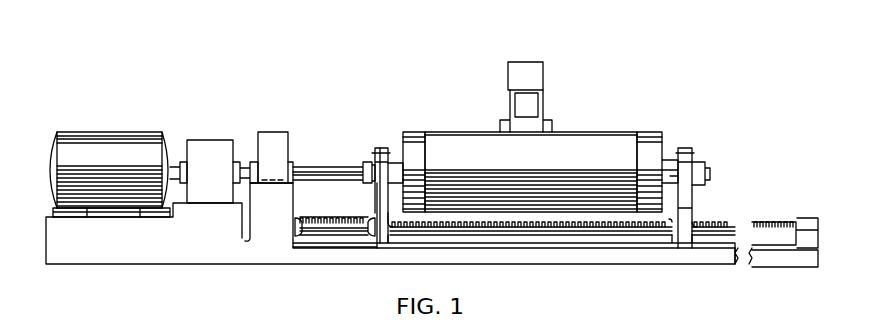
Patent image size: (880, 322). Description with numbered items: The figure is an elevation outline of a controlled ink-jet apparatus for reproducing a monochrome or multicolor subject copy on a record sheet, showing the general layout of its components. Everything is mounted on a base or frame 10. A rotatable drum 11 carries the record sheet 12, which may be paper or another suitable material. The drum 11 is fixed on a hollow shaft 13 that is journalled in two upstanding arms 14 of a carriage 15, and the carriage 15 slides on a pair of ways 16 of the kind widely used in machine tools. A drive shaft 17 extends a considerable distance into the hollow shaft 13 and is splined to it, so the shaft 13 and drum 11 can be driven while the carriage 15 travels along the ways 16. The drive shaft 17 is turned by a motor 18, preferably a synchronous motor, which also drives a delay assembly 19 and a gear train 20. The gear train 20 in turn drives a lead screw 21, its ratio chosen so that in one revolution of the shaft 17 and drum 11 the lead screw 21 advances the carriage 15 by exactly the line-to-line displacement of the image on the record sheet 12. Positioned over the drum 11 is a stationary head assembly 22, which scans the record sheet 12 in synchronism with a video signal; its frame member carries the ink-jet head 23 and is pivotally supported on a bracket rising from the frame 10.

The base or frame 10 is at (125, 253).
The drum 11 is at (413, 132).
The record sheet 12 is at (475, 132).
The shaft 13 is at (708, 169).
The upstanding arms 14 is at (383, 148).
The carriage 15 is at (522, 240).
The ways 16 is at (349, 237).
The drive shaft 17 is at (327, 165).
The motor 18 is at (115, 132).
The delay assembly 19 is at (212, 140).
The gear train 20 is at (278, 132).
The lead screw 21 is at (342, 220).
The stationary head assembly 22 is at (527, 62).
The ink-jet head 23 is at (532, 103).